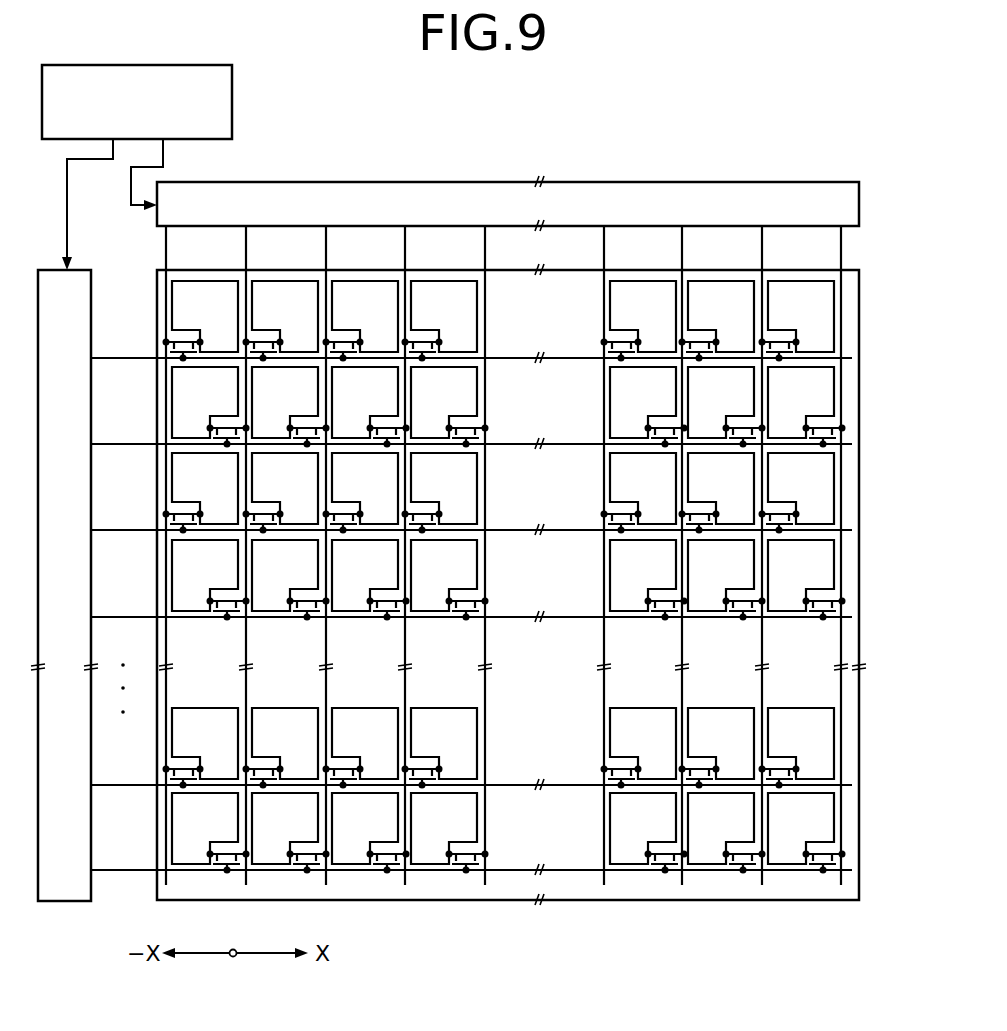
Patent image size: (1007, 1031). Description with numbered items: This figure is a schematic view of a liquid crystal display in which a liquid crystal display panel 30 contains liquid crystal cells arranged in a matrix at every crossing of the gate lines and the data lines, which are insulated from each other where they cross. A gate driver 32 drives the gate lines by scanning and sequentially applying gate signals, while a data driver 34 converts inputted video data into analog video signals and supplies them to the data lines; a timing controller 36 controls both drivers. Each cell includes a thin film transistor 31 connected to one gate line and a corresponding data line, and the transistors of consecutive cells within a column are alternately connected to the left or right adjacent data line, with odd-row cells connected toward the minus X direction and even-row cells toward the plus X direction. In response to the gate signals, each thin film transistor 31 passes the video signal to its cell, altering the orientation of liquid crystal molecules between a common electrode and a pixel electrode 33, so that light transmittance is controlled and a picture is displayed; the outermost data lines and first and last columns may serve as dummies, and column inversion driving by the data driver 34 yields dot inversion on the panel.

The liquid crystal display panel 30 is at (463, 540).
The thin film transistor 31 is at (432, 346).
The gate driver 32 is at (78, 897).
The pixel electrode 33 is at (178, 323).
The data driver 34 is at (591, 183).
The timing controller 36 is at (232, 82).